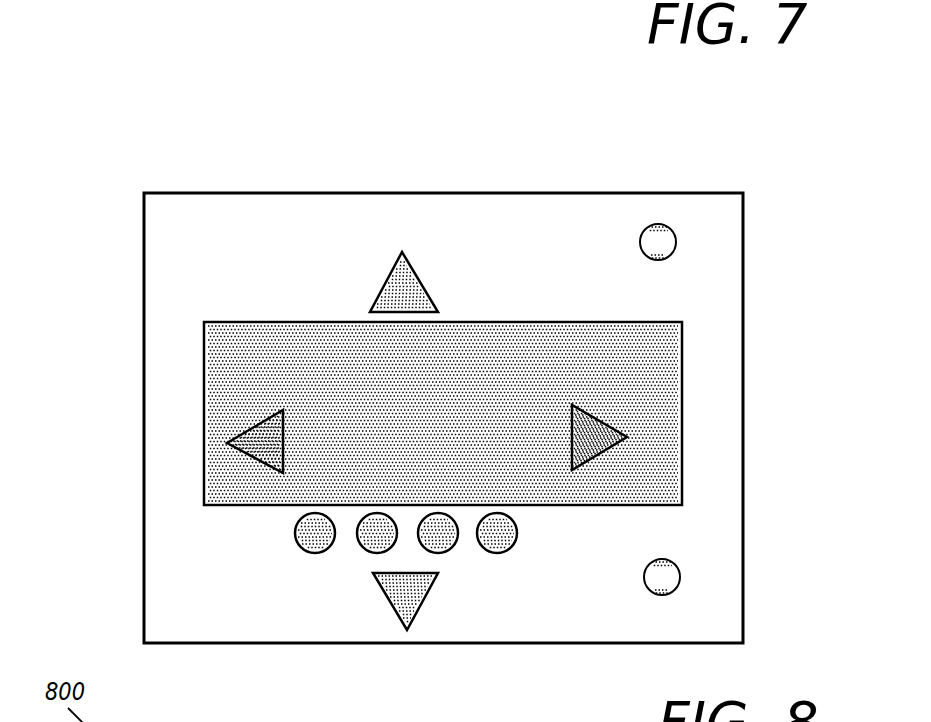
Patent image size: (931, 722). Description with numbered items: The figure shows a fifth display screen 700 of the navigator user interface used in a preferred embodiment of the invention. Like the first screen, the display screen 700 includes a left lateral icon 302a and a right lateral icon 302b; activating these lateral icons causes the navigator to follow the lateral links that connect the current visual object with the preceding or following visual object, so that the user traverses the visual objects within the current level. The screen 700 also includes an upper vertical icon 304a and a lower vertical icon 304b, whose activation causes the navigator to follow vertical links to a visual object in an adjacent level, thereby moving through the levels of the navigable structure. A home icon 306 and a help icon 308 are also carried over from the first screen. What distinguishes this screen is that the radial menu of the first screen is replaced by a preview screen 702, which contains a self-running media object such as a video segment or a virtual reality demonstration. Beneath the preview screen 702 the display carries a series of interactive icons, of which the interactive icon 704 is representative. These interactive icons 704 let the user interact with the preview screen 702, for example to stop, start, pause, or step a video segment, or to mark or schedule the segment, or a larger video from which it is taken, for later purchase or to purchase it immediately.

The fifth display screen 700 is at (128, 124).
The preview screen 702 is at (203, 369).
The interactive icon 704 is at (508, 550).
The left lateral icon 302a is at (227, 442).
The right lateral icon 302b is at (603, 413).
The upper vertical icon 304a is at (390, 275).
The lower vertical icon 304b is at (420, 613).
The home icon 306 is at (680, 560).
The help icon 308 is at (660, 224).